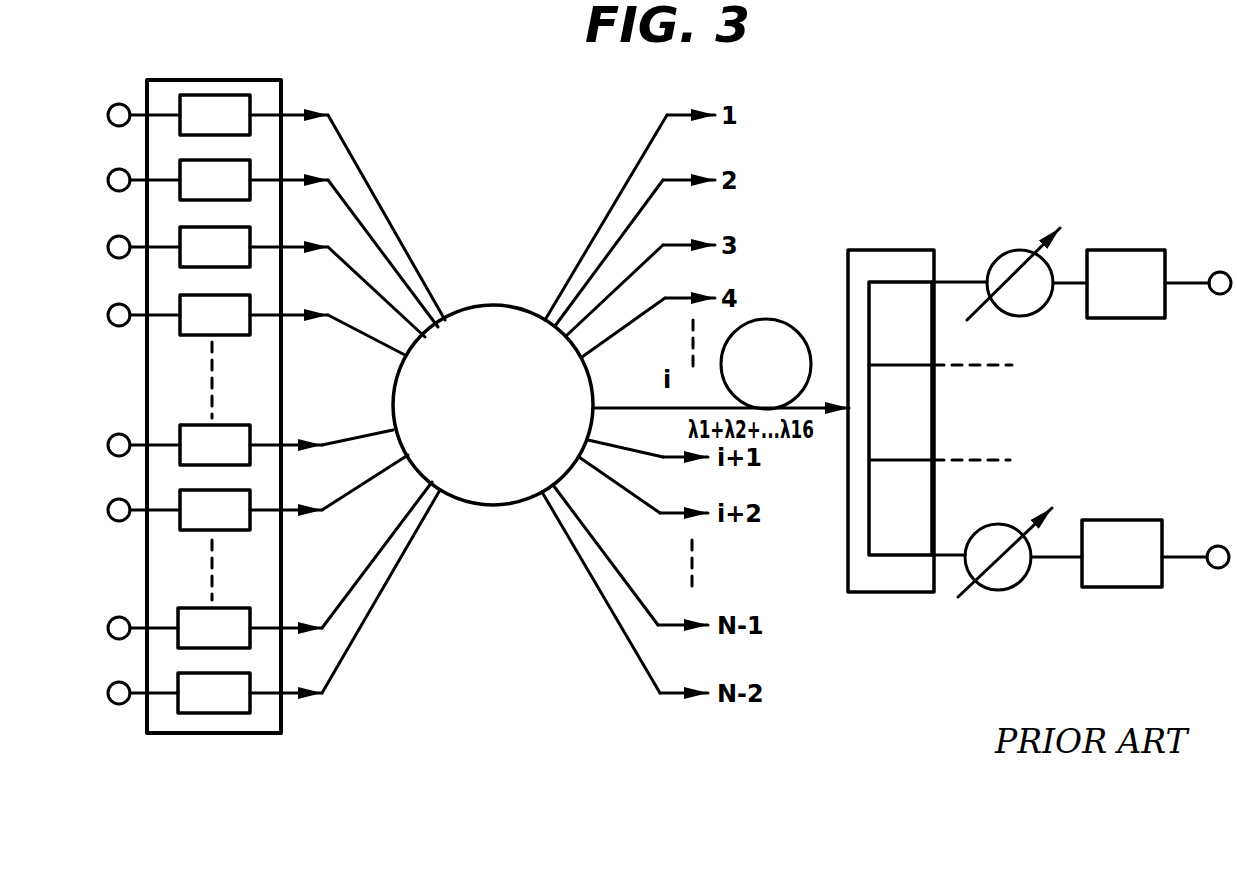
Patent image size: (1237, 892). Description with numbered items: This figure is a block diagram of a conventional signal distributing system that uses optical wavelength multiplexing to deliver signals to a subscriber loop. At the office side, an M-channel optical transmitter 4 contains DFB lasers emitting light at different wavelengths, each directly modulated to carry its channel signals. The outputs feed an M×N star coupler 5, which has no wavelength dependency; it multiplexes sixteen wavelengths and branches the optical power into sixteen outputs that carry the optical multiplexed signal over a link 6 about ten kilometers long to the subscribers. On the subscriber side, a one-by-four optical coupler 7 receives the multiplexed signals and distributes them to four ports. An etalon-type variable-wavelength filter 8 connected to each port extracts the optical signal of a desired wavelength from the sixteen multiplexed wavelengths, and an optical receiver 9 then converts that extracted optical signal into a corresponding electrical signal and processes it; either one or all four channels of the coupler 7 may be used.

The M-channel optical transmitter 4 is at (277, 80).
The M×N star coupler 5 is at (505, 307).
The optical fiber link 6 is at (770, 320).
The 1×4 optical coupler 7 is at (893, 250).
The etalon-type variable-wavelength filter 8 is at (1007, 254).
The optical receiver 9 is at (1128, 250).